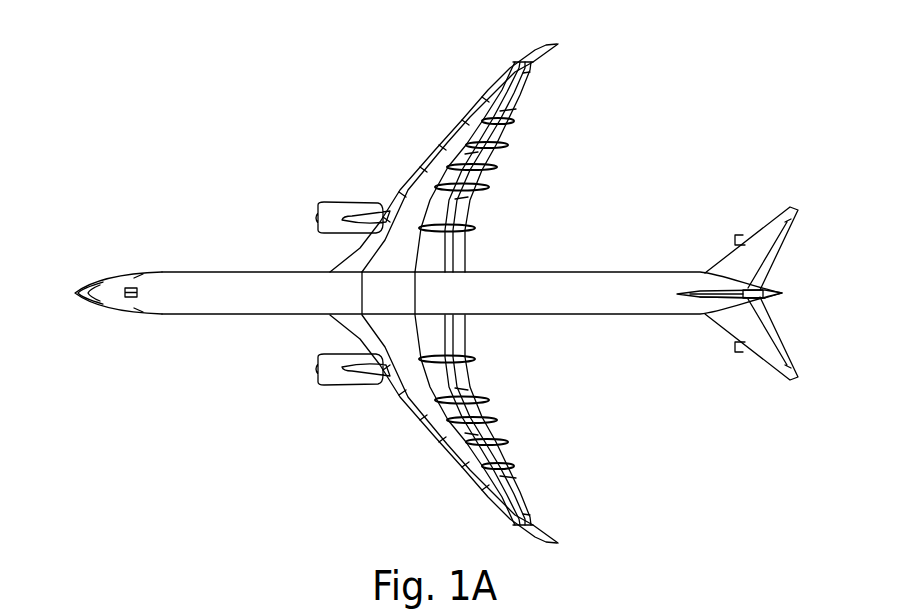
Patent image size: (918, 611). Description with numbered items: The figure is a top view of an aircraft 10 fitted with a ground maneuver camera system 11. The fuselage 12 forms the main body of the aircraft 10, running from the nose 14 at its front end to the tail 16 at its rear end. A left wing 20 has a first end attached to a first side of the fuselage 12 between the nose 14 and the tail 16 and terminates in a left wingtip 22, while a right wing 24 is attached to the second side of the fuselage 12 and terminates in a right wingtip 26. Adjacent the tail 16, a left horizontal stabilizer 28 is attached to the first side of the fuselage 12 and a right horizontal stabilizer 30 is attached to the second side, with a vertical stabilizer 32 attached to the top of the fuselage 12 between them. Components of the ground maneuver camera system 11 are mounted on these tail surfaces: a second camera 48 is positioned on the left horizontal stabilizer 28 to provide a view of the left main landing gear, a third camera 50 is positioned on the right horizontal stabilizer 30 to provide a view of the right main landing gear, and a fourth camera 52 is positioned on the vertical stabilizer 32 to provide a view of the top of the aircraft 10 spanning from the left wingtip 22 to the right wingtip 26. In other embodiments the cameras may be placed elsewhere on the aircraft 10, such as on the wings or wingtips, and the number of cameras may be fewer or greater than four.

The aircraft 10 is at (211, 89).
The ground maneuver camera system 11 is at (639, 184).
The fuselage 12 is at (250, 288).
The nose 14 is at (77, 293).
The tail 16 is at (780, 293).
The left wing 20 is at (425, 380).
The left wingtip 22 is at (538, 535).
The right wing 24 is at (425, 207).
The right wingtip 26 is at (538, 52).
The left horizontal stabilizer 28 is at (785, 378).
The right horizontal stabilizer 30 is at (765, 233).
The vertical stabilizer 32 is at (768, 303).
The second camera 48 is at (737, 352).
The third camera 50 is at (738, 236).
The fourth camera 52 is at (762, 289).